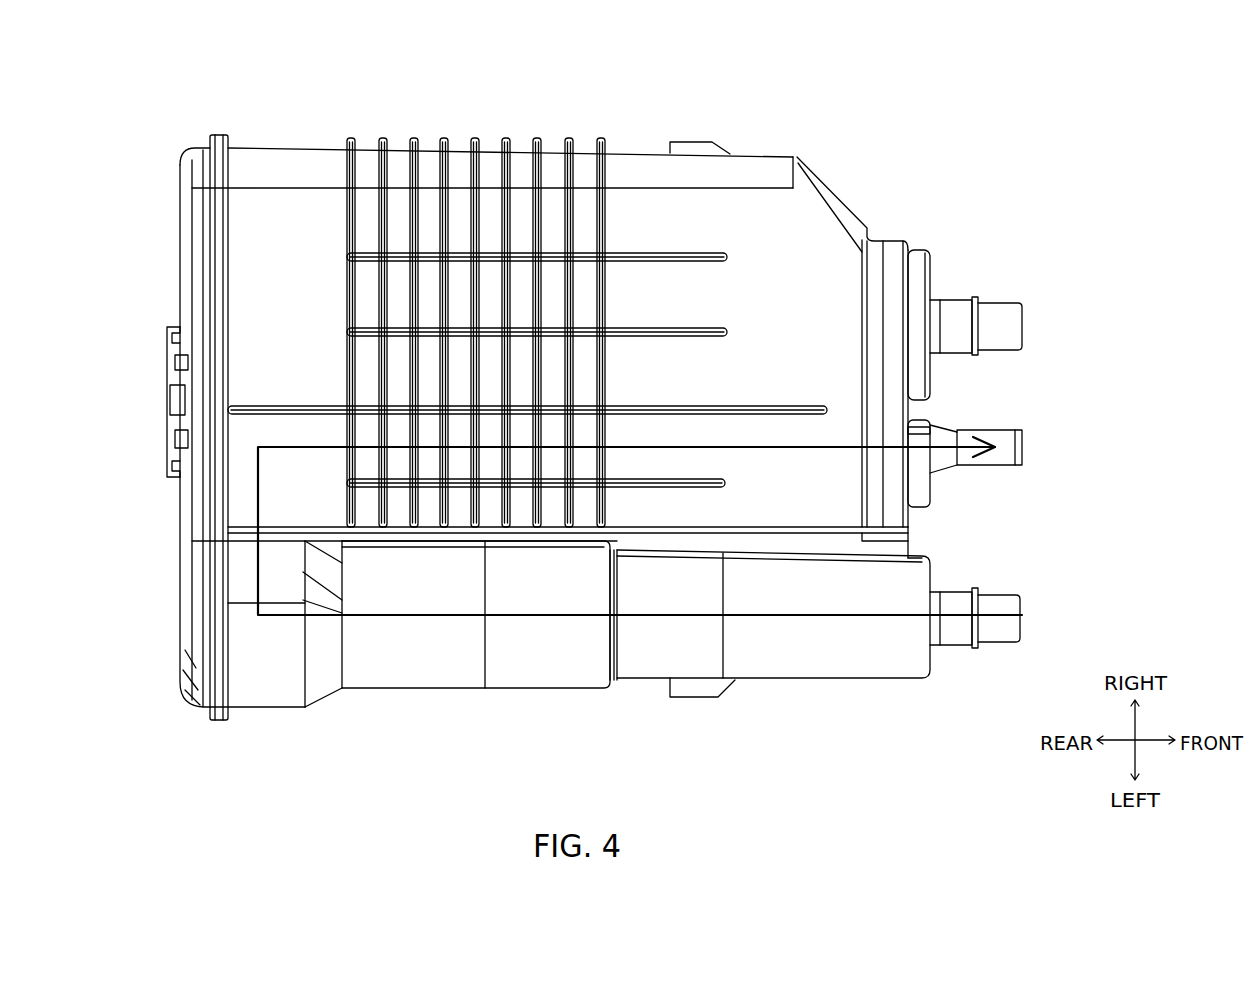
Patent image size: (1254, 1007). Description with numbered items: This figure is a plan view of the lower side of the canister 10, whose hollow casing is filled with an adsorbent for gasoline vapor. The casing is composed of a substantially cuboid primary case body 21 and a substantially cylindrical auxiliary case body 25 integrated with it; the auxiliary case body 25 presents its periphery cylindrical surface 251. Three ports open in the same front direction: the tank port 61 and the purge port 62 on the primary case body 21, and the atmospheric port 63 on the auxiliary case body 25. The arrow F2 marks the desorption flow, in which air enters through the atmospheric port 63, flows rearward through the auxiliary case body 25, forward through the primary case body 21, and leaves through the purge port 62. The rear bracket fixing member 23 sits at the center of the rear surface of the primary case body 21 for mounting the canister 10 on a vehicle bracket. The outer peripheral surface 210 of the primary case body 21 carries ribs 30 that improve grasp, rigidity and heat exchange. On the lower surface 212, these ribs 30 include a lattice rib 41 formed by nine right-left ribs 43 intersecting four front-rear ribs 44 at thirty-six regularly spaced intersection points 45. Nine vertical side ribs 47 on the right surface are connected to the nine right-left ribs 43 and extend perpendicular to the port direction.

The canister 10 is at (913, 172).
The primary case body 21 is at (745, 213).
The rear bracket fixing member 23 is at (167, 358).
The auxiliary case body 25 is at (812, 662).
The periphery cylindrical surface 251 is at (543, 675).
The ribs 30 is at (538, 287).
The lattice rib 41 is at (527, 287).
The right-left ribs 43 is at (440, 355).
The front-rear ribs 44 is at (645, 325).
The intersection points 45 is at (885, 543).
The side ribs 47 is at (414, 140).
The tank port 61 is at (1025, 327).
The purge port 62 is at (1025, 446).
The atmospheric port 63 is at (1025, 618).
The outer peripheral surface 210 is at (544, 386).
The lower surface 212 is at (290, 172).